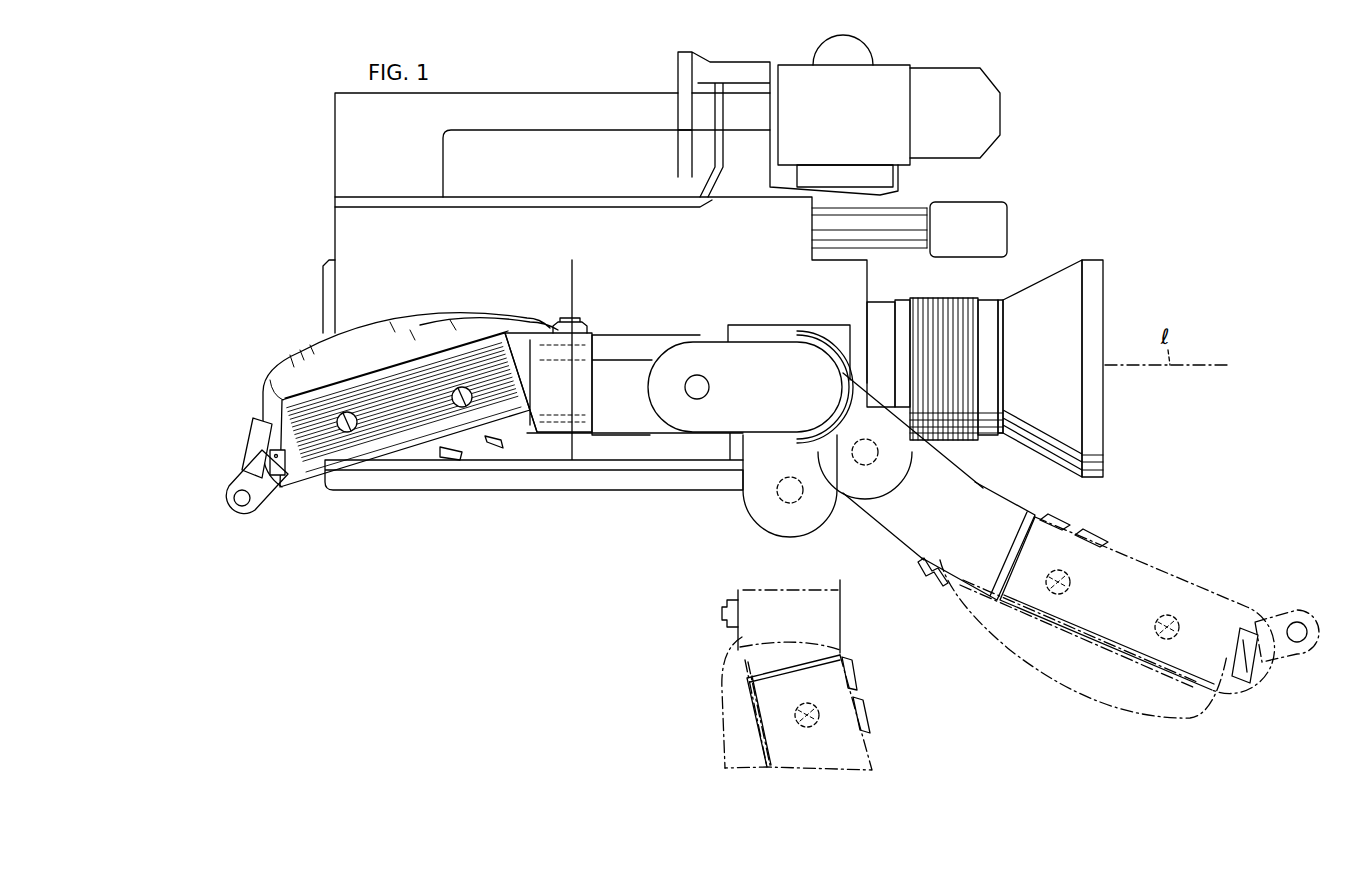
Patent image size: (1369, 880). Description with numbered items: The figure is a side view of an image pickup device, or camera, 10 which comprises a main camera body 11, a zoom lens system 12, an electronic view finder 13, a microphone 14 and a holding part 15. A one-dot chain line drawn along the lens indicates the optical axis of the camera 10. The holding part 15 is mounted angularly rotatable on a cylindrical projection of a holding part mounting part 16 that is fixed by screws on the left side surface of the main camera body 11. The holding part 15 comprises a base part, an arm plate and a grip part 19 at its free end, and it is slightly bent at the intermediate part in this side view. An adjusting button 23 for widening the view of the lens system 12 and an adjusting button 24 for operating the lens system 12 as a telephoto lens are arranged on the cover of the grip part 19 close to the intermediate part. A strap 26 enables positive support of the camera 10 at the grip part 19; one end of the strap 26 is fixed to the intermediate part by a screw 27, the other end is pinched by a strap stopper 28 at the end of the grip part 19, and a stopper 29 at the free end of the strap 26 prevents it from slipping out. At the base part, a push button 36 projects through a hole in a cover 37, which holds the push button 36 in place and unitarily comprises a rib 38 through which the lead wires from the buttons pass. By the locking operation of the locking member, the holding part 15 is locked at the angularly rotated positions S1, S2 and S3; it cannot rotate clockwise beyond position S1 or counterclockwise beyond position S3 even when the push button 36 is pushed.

The image pickup device 10 is at (536, 70).
The main camera body 11 is at (340, 242).
The zoom lens system 12 is at (940, 300).
The electronic view finder 13 is at (893, 70).
The microphone 14 is at (975, 205).
The holding part 15 is at (552, 435).
The holding part mounting part 16 is at (783, 328).
The grip part 19 is at (363, 460).
The adjusting button 23 is at (500, 443).
The adjusting button 24 is at (452, 457).
The strap 26 is at (400, 322).
The screw 27 is at (560, 322).
The strap stopper 28 is at (248, 430).
The stopper 29 is at (250, 515).
The push button 36 is at (706, 390).
The cover 37 is at (703, 345).
The rib 38 is at (621, 346).
The angularly rotated position S1 is at (238, 445).
The angularly rotated position S2 is at (823, 775).
The angularly rotated position S3 is at (1263, 667).